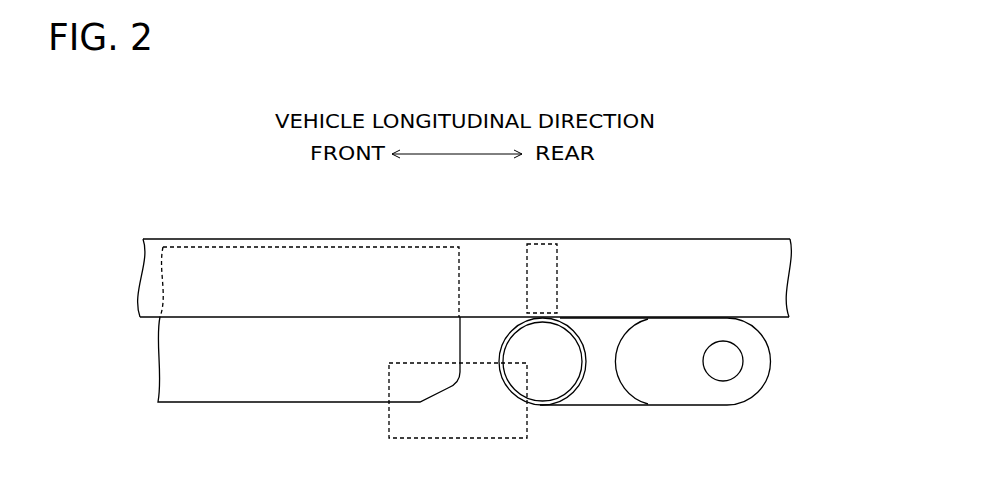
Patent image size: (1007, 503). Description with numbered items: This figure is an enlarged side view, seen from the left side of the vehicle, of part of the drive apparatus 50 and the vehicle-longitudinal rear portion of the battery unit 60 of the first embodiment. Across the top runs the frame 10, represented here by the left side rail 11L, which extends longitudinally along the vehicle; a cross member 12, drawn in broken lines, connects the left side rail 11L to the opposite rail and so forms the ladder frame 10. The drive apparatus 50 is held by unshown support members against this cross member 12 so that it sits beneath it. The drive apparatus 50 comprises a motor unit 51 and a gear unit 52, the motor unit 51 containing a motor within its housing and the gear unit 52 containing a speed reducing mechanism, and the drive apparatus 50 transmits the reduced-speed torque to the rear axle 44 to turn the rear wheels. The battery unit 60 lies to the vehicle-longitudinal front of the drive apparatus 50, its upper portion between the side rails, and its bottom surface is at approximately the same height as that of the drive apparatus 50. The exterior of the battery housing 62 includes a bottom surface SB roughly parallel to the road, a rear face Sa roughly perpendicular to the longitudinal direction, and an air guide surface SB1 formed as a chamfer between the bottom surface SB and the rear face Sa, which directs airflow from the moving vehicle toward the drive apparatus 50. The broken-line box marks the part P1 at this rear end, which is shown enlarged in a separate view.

The frame 10 is at (465, 253).
The left side rail 11L is at (483, 247).
The cross member 12 is at (541, 245).
The battery housing 62 is at (251, 383).
The battery unit 60 is at (256, 448).
The drive apparatus 50 is at (634, 405).
The motor unit 51 is at (552, 385).
The gear unit 52 is at (607, 386).
The rear axle 44 is at (721, 385).
The rear face Sa is at (462, 337).
The bottom surface SB is at (328, 403).
The air guide surface SB1 is at (422, 402).
The part P1 is at (487, 438).